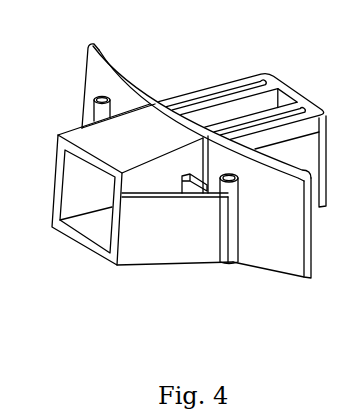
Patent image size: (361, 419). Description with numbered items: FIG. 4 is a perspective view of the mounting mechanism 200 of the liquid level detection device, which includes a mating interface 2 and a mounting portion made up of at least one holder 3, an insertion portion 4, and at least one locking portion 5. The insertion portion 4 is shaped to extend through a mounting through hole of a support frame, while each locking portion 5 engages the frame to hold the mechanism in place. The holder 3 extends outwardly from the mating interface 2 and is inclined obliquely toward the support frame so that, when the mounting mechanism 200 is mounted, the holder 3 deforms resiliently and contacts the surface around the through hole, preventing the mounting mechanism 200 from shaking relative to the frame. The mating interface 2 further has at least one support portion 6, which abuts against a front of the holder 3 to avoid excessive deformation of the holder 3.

The mounting mechanism 200 is at (177, 155).
The mating interface 2 is at (73, 180).
The holder 3 is at (93, 72).
The insertion portion 4 is at (266, 78).
The locking portion 5 is at (222, 80).
The support portion 6 is at (170, 235).